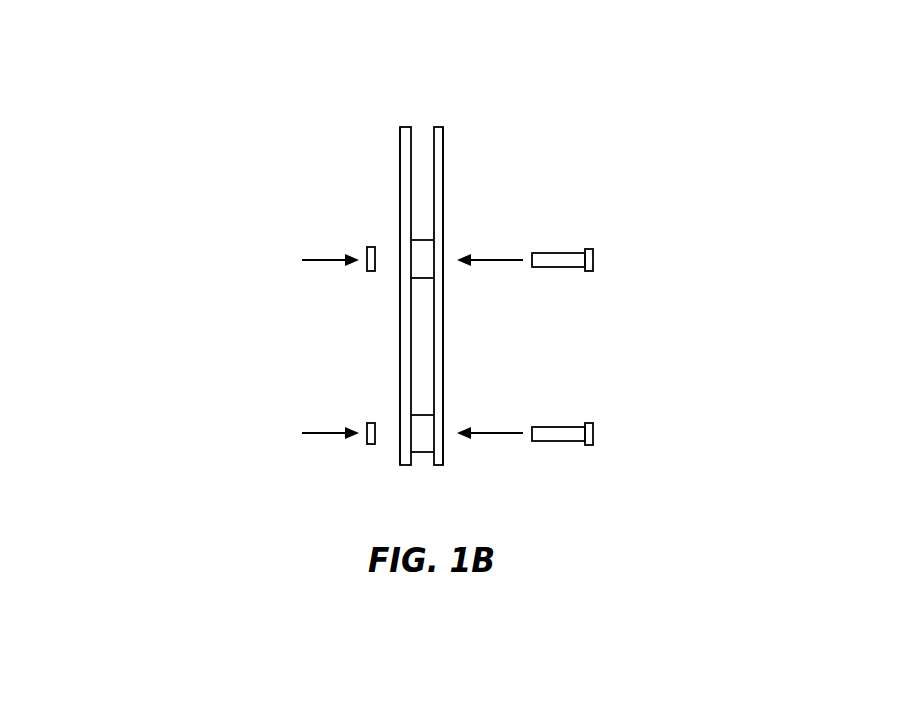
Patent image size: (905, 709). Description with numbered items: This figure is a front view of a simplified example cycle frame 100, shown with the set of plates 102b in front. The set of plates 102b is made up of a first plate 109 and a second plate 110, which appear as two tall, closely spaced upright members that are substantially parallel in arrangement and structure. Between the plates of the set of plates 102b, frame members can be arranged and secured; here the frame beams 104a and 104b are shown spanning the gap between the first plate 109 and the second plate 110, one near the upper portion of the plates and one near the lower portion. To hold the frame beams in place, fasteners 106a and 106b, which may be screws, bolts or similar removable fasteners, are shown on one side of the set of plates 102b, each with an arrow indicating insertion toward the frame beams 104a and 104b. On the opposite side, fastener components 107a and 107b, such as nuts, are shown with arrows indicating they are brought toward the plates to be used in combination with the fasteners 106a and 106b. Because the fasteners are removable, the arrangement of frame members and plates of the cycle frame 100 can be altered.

The cycle frame 100 is at (176, 218).
The set of plates 102b is at (462, 128).
The first plate 109 is at (400, 194).
The second plate 110 is at (445, 194).
The frame beam 104a is at (424, 426).
The frame beam 104b is at (424, 251).
The fastener 106a is at (585, 248).
The fastener 106b is at (585, 423).
The fastener component 107a is at (369, 243).
The fastener component 107b is at (369, 420).